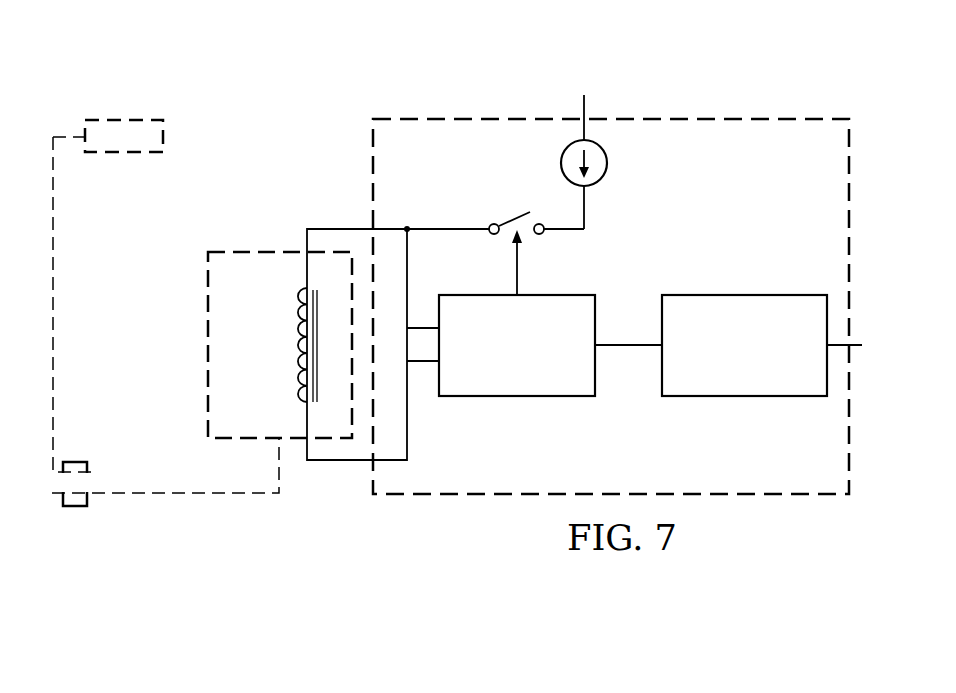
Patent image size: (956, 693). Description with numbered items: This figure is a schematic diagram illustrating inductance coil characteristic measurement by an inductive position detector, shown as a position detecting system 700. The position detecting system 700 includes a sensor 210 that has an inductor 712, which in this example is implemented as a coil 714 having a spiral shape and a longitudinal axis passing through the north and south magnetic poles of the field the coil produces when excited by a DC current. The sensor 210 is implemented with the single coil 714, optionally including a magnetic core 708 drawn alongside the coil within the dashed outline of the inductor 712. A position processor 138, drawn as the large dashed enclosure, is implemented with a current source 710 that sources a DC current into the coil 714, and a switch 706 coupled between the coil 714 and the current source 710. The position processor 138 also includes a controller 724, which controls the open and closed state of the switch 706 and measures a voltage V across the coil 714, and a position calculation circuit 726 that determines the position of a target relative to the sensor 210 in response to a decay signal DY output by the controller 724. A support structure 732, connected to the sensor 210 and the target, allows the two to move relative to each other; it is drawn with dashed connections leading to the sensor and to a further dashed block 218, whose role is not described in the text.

The position detecting system 700 is at (316, 70).
The position processor 138 is at (641, 111).
The connector / component 218 is at (125, 119).
The sensor 210 is at (259, 242).
The inductor 712 is at (180, 262).
The coil 714 is at (292, 351).
The magnetic core 708 is at (318, 388).
The switch 706 is at (515, 214).
The current source 710 is at (608, 161).
The controller 724 is at (528, 398).
The position calculation circuit 726 is at (745, 398).
The support structure 732 is at (73, 509).